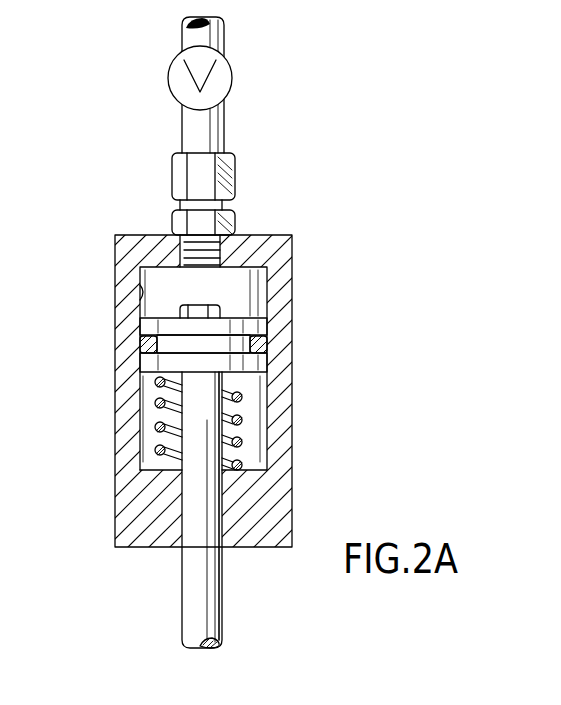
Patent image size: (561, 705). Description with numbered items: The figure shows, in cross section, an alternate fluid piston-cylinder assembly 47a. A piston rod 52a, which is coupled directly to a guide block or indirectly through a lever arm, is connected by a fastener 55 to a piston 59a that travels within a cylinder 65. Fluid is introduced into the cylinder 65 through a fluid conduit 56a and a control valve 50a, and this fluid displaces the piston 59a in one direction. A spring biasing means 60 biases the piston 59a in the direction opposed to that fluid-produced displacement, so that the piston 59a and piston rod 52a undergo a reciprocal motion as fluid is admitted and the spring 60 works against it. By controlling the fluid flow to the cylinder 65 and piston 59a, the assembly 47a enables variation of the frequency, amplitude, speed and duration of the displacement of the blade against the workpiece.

The fluid piston-cylinder assembly 47a is at (88, 437).
The control valve 50a is at (175, 100).
The piston rod 52a is at (223, 598).
The fastener 55 is at (210, 305).
The fluid conduit 56a is at (224, 112).
The piston 59a is at (265, 315).
The spring biasing means 60 is at (242, 421).
The cylinder 65 is at (140, 297).